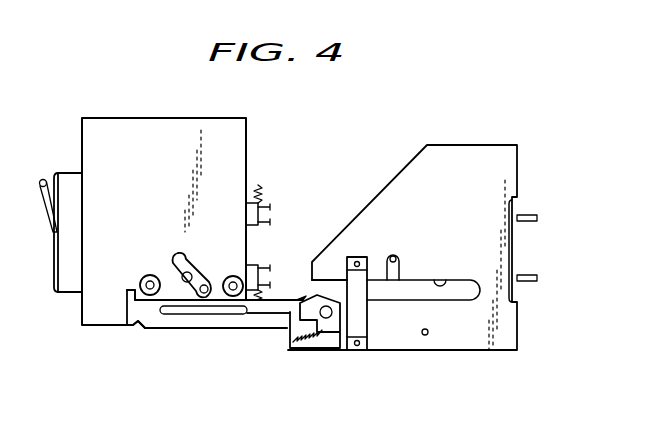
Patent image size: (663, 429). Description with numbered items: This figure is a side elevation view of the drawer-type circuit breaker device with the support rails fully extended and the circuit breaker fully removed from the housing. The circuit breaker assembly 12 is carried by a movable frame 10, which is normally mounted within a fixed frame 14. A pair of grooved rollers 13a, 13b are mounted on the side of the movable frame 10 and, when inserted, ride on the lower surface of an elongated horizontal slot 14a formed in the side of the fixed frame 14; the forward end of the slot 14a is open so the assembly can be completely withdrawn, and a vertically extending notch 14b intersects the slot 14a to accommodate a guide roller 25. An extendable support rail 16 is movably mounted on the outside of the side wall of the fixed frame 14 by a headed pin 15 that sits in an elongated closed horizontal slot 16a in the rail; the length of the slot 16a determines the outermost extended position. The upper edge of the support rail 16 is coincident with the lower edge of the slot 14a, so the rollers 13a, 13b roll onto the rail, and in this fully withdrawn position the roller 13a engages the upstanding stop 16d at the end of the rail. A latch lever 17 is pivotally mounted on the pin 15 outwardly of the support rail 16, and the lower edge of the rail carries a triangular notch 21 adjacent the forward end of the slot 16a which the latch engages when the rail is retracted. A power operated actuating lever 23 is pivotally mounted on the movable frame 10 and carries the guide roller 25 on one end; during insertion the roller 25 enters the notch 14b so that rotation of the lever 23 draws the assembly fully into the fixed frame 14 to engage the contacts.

The movable frame 10 is at (249, 127).
The circuit breaker assembly 12 is at (66, 172).
The roller 13a is at (148, 274).
The roller 13b is at (232, 297).
The fixed frame 14 is at (421, 236).
The elongated horizontal slot 14a is at (443, 282).
The vertically extending notch 14b is at (393, 256).
The headed pin 15 is at (328, 319).
The extendable support rail 16 is at (198, 299).
The elongated closed horizontal slot 16a is at (255, 313).
The upstanding stop 16d is at (136, 291).
The latch lever 17 is at (302, 300).
The triangular notch 21 is at (138, 326).
The actuating lever 23 is at (180, 283).
The guide roller 25 is at (206, 298).